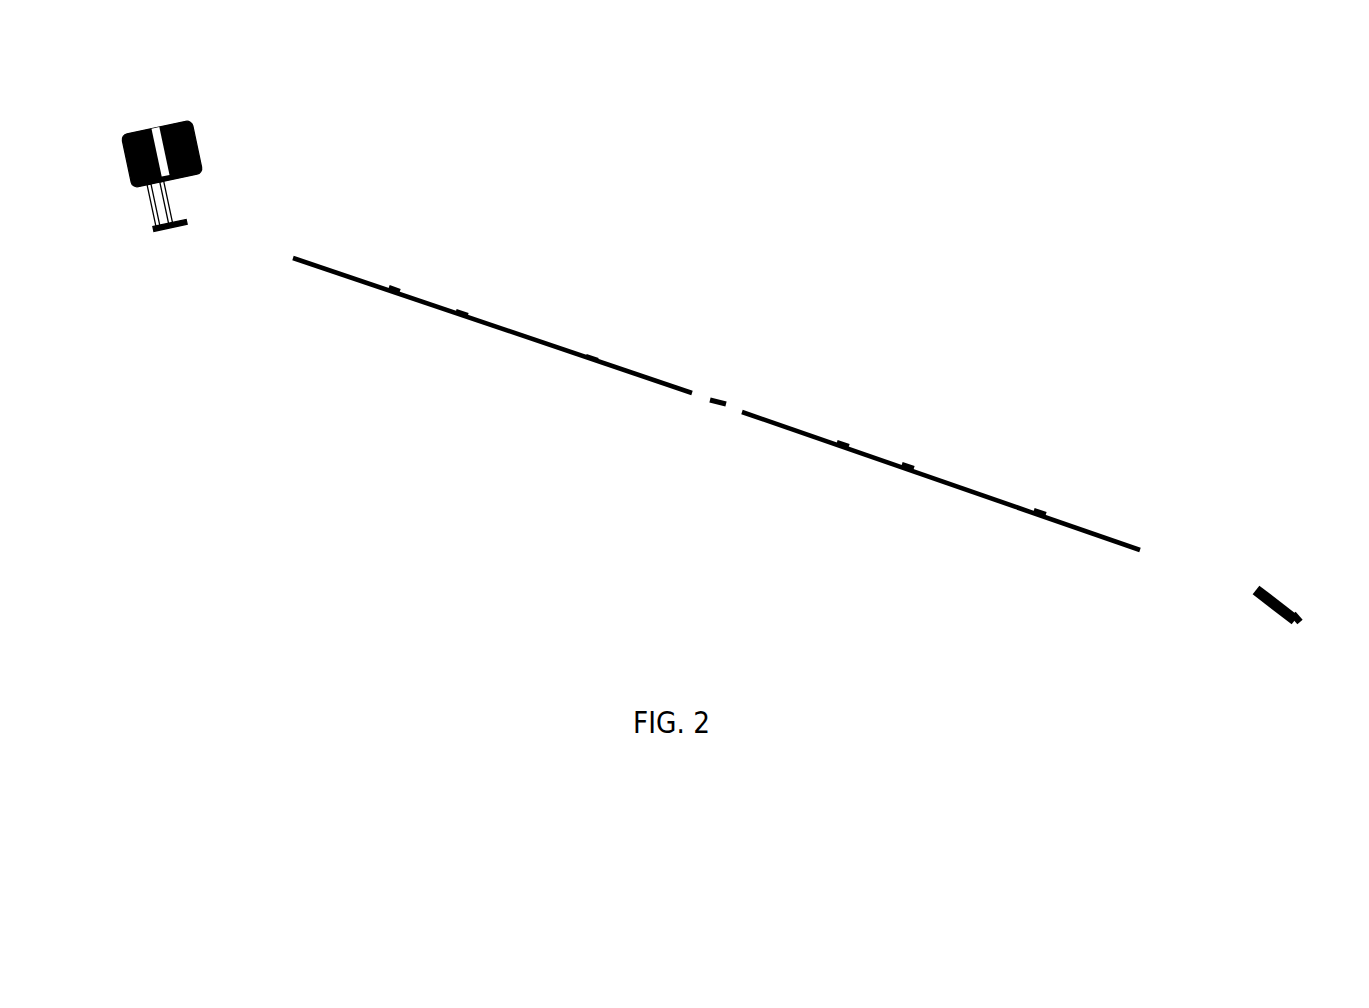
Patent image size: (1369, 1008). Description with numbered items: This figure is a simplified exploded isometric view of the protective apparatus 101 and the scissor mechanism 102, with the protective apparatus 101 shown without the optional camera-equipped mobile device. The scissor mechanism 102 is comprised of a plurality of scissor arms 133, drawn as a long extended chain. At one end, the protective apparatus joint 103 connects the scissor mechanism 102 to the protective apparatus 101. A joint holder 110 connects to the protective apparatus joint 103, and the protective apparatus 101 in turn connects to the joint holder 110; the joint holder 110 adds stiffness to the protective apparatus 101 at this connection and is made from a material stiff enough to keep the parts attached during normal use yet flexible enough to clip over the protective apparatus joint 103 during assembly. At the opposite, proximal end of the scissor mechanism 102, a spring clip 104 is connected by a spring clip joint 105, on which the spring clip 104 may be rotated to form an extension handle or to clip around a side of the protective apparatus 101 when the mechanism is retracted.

The protective apparatus 101 is at (201, 112).
The joint holder 110 is at (212, 212).
The scissor mechanism 102 is at (585, 334).
The protective apparatus joint 103 is at (715, 429).
The scissor arms 133 is at (650, 355).
The spring clip joint 105 is at (1269, 576).
The spring clip 104 is at (1313, 606).